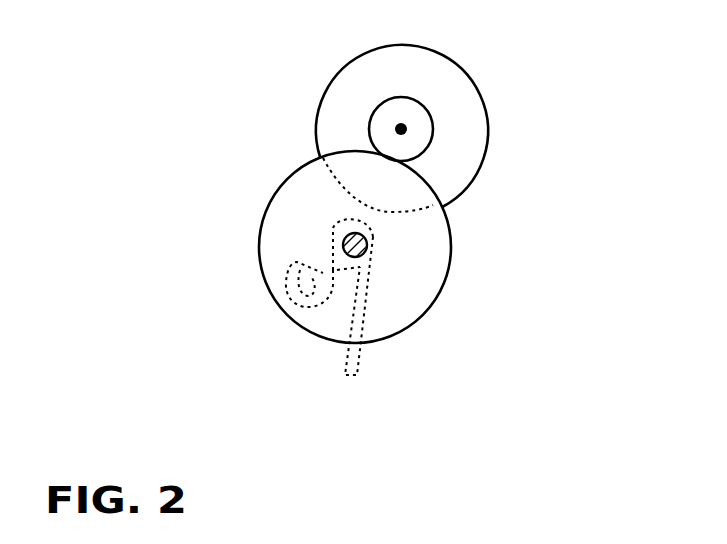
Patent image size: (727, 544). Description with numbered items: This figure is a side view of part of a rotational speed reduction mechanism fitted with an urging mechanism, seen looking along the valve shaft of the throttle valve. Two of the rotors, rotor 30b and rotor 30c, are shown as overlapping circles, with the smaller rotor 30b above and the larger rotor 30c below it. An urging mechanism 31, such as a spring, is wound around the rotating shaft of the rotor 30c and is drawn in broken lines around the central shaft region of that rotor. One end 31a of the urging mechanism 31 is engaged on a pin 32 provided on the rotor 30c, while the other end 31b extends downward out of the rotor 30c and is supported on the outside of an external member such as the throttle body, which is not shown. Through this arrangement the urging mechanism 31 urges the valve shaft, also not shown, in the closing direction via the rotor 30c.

The rotor 30b is at (488, 125).
The rotor 30c is at (448, 275).
The urging mechanism 31 is at (337, 226).
The one end of the urging mechanism 31a is at (292, 268).
The other end of the urging mechanism 31b is at (383, 327).
The pin 32 is at (295, 318).